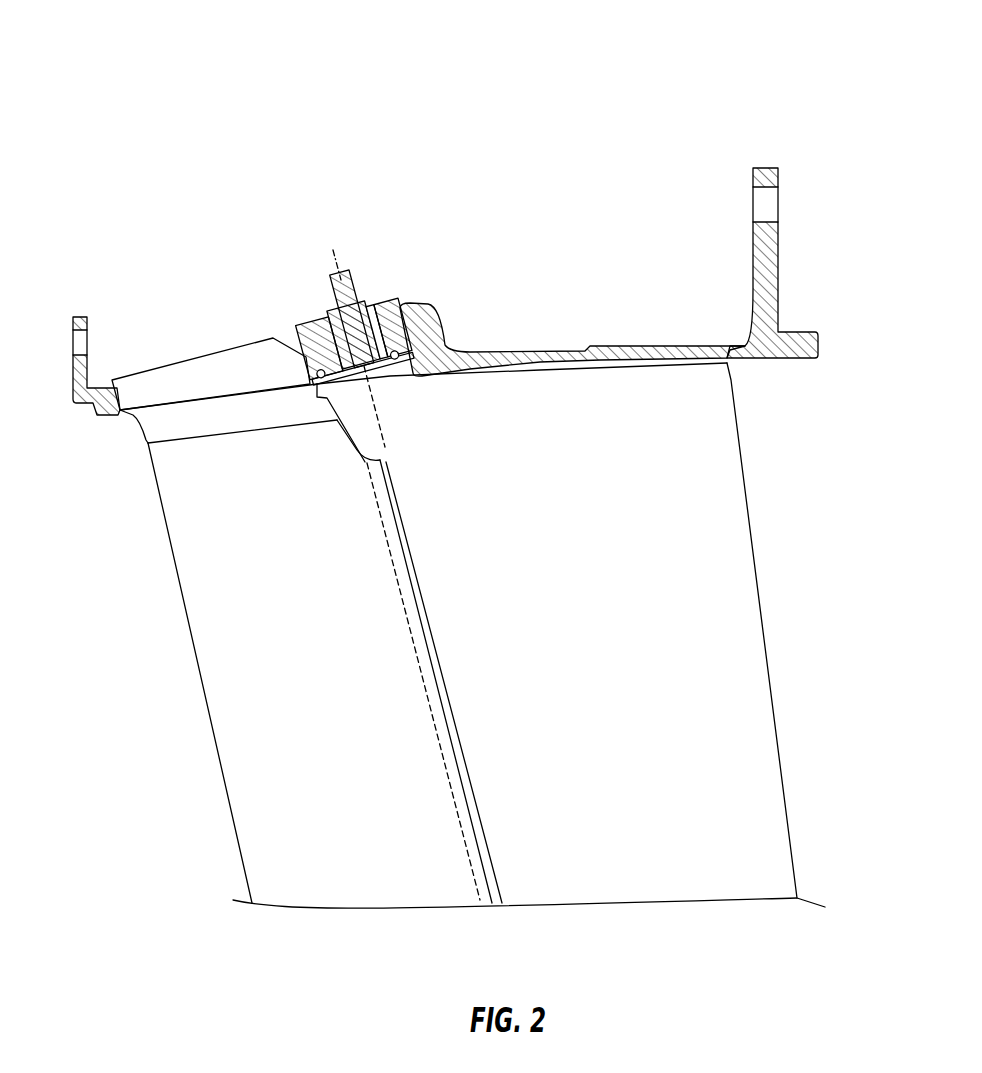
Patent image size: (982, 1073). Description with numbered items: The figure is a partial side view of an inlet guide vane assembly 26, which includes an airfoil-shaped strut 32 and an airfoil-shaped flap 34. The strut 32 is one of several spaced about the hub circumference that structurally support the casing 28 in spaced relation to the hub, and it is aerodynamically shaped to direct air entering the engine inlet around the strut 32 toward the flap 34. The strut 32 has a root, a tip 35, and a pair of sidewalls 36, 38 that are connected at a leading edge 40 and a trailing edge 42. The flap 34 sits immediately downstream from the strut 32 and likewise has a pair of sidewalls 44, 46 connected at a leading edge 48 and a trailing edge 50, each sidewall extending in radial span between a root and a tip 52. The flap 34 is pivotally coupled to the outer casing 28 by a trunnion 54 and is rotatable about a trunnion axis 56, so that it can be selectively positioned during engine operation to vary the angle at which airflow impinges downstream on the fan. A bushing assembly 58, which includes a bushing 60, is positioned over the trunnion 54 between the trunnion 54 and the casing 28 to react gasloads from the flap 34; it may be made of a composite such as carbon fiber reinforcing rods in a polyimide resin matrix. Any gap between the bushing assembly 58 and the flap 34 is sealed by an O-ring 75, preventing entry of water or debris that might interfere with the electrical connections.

The inlet guide vane assembly 26 is at (588, 82).
The casing 28 is at (780, 266).
The strut 32 is at (222, 656).
The flap 34 is at (718, 585).
The tip 35 is at (180, 422).
The sidewall 36 is at (230, 758).
The sidewall 38 is at (230, 718).
The leading edge 40 is at (207, 693).
The trailing edge 42 is at (447, 712).
The sidewall 44 is at (760, 752).
The sidewall 46 is at (757, 702).
The leading edge 48 is at (385, 540).
The trailing edge 50 is at (767, 647).
The tip 52 is at (615, 362).
The trunnion 54 is at (360, 275).
The trunnion axis 56 is at (390, 440).
The bushing assembly 58 is at (300, 320).
The bushing 60 is at (393, 298).
The O-ring 75 is at (300, 338).